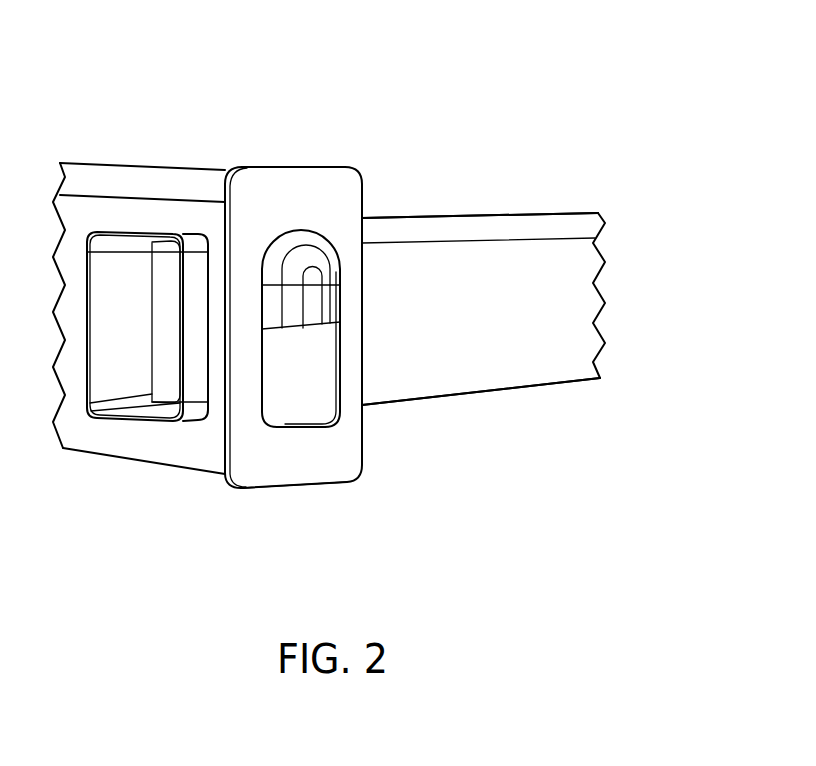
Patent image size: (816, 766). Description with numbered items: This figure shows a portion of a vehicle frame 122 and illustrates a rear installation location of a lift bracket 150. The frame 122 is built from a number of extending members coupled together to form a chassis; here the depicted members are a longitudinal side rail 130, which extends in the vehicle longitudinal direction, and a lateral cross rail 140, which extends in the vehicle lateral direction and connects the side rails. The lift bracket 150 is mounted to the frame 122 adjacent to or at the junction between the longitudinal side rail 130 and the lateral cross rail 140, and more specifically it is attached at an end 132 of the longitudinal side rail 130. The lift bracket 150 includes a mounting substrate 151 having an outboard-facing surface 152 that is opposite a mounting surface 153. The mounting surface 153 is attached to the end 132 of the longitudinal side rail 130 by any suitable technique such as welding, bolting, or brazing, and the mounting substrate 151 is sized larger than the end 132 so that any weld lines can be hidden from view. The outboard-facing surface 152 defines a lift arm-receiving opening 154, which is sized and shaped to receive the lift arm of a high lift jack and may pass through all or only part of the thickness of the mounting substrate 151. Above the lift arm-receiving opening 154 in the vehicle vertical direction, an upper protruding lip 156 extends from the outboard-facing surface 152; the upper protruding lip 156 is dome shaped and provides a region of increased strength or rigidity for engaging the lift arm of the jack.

The frame 122 is at (535, 462).
The longitudinal side rail 130 is at (128, 480).
The end of the longitudinal side rail 132 is at (262, 160).
The lateral cross rail 140 is at (472, 210).
The lift bracket 150 is at (288, 271).
The mounting substrate 151 is at (363, 430).
The outboard-facing surface 152 is at (258, 472).
The mounting surface 153 is at (226, 424).
The lift arm-receiving opening 154 is at (295, 418).
The upper protruding lip 156 is at (295, 270).